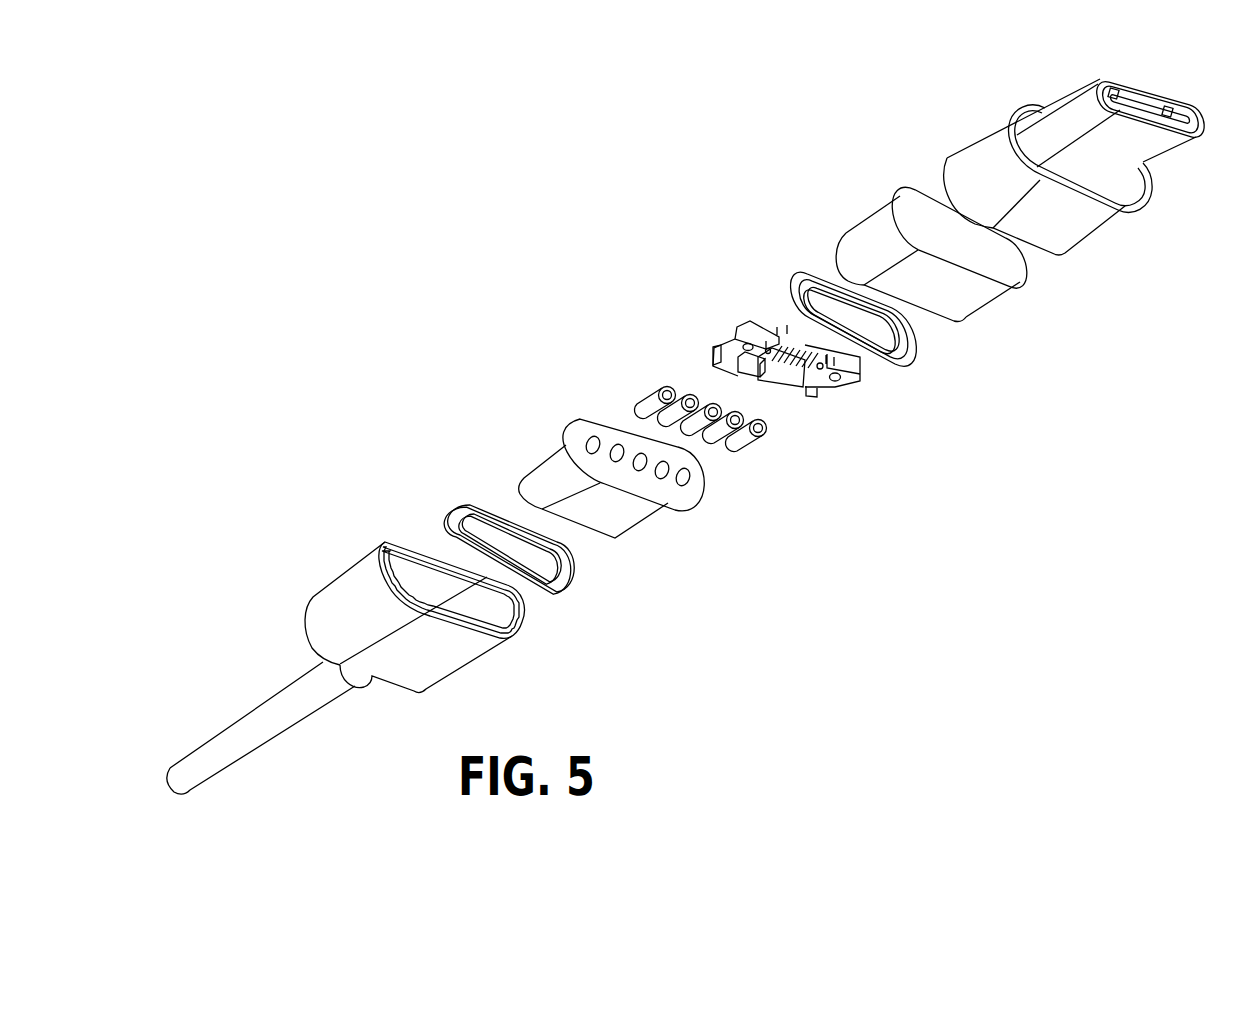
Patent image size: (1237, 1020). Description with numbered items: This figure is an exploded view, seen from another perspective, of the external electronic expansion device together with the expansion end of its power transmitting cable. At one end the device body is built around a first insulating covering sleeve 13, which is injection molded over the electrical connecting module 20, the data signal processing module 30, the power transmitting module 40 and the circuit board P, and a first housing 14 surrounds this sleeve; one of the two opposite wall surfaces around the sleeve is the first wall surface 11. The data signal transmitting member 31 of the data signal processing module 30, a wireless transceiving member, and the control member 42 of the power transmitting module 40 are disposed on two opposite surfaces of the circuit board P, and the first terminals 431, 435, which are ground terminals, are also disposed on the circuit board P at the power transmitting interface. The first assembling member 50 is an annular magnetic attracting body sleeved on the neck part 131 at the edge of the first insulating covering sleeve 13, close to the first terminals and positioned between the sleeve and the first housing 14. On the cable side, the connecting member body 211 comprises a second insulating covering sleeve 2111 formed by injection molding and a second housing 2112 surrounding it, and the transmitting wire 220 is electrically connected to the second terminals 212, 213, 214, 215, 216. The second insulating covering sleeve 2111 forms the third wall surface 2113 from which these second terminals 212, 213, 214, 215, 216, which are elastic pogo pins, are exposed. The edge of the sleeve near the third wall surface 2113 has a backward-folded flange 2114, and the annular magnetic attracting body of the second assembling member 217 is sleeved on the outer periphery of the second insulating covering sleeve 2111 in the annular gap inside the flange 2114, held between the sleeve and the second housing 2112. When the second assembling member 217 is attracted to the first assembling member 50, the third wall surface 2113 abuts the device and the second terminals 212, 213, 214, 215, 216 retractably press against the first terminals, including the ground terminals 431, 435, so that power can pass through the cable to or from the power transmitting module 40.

The transmitting wire 220 is at (282, 722).
The connecting member body 211 is at (463, 524).
The second housing 2112 is at (352, 573).
The second insulating covering sleeve 2111 is at (559, 460).
The third wall surface 2113 is at (608, 424).
The flange 2114 is at (667, 507).
The second assembling member 217 is at (468, 507).
The second terminal 212 is at (664, 388).
The second terminal 213 is at (688, 396).
The second terminal 214 is at (721, 399).
The second terminal 215 is at (733, 414).
The second terminal 216 is at (762, 426).
The data signal processing module 30 is at (787, 350).
The data signal transmitting member 31 is at (790, 327).
The circuit board P is at (740, 333).
The power transmitting module 40 is at (787, 380).
The control member 42 is at (792, 388).
The first terminal 431 is at (823, 395).
The first terminal 435 is at (713, 350).
The first assembling member 50 is at (790, 282).
The first wall surface 11 is at (955, 243).
The first insulating covering sleeve 13 is at (878, 217).
The neck part 131 is at (937, 320).
The first housing 14 is at (1068, 226).
The electrical connecting module 20 is at (1145, 160).